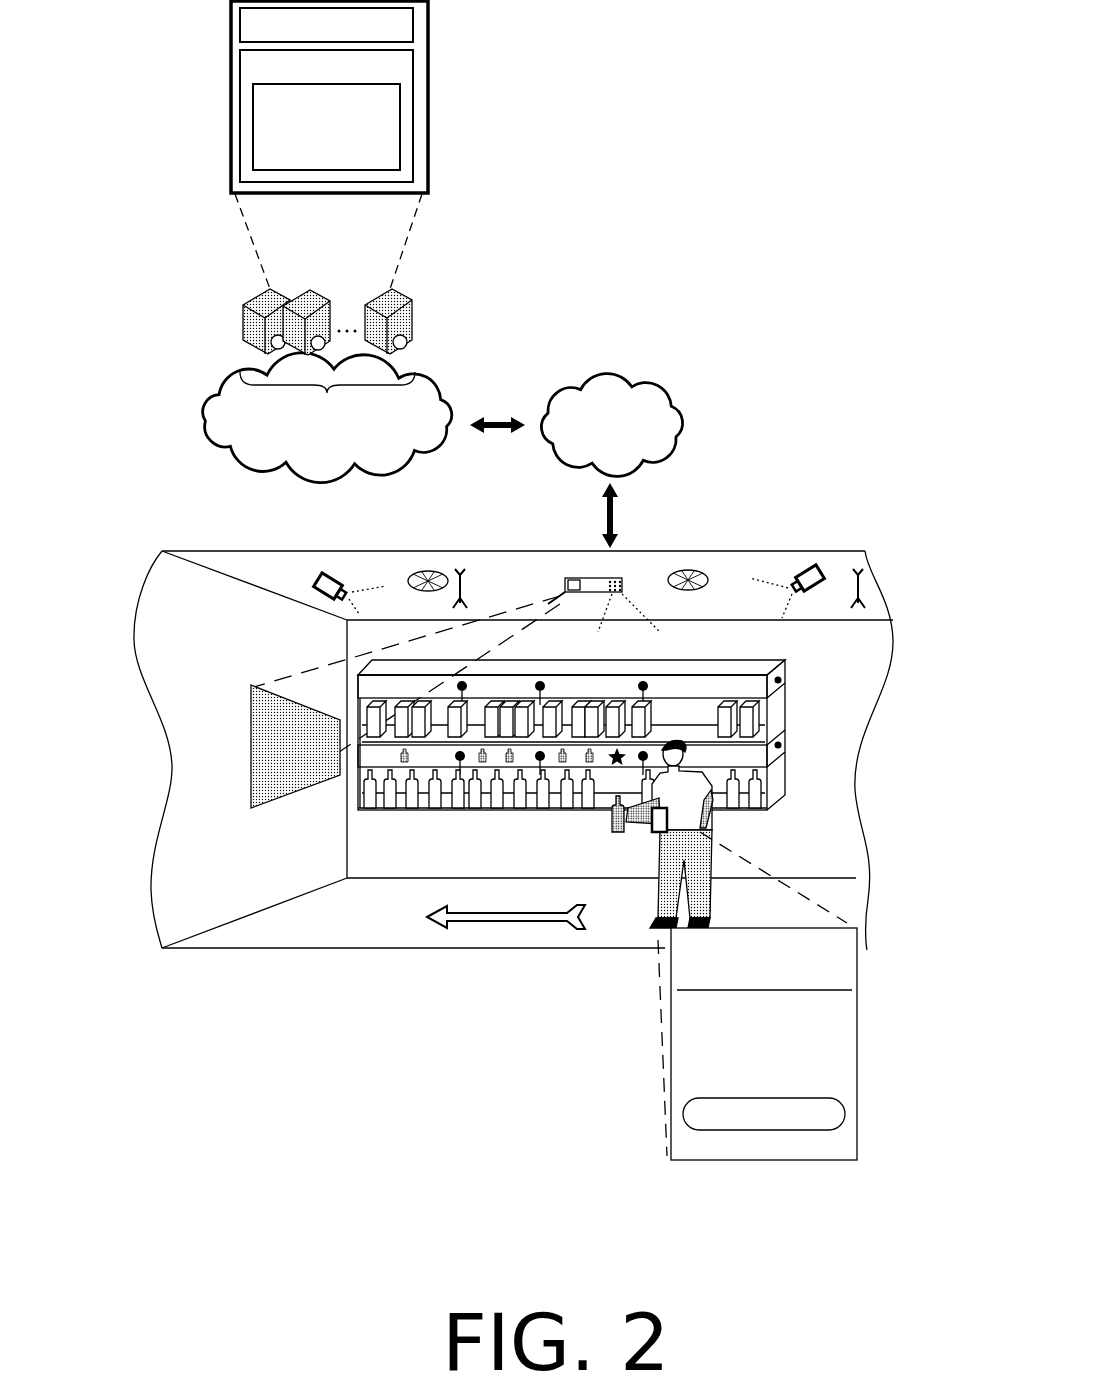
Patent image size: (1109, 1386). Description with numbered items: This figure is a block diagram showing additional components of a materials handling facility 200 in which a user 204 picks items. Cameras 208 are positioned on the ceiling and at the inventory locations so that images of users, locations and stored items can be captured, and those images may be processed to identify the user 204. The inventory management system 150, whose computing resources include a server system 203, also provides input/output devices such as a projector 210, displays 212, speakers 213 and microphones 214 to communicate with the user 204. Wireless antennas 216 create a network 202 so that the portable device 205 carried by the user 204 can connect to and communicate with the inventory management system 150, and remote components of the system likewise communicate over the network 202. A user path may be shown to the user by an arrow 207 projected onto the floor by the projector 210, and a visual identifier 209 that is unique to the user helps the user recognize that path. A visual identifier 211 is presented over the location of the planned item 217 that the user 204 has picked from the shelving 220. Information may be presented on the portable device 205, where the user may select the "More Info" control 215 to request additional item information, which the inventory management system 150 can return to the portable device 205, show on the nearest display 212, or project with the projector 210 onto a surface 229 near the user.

The inventory management system 150 is at (329, 97).
The materials handling facility 200 is at (863, 552).
The network 202 is at (611, 425).
The server system 203 is at (327, 386).
The user 204 is at (708, 828).
The portable device 205 is at (650, 834).
The arrow 207 is at (437, 922).
The cameras 208 is at (322, 577).
The visual identifier 209 is at (402, 768).
The projector 210 is at (590, 578).
The visual identifier 211 is at (616, 766).
The displays 212 is at (563, 709).
The speakers 213 is at (690, 568).
The microphones 214 is at (412, 573).
The "More Info" control 215 is at (848, 1112).
The wireless antennas 216 is at (460, 572).
The planned item 217 is at (611, 824).
The inventory shelf 220 is at (497, 812).
The surface 229 is at (205, 888).